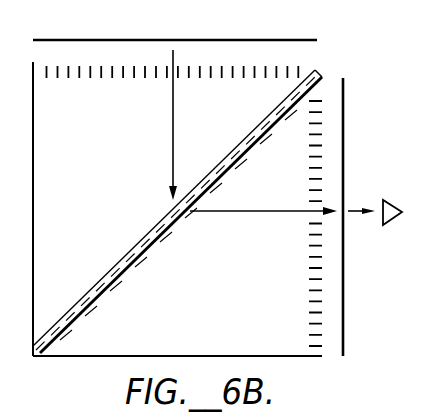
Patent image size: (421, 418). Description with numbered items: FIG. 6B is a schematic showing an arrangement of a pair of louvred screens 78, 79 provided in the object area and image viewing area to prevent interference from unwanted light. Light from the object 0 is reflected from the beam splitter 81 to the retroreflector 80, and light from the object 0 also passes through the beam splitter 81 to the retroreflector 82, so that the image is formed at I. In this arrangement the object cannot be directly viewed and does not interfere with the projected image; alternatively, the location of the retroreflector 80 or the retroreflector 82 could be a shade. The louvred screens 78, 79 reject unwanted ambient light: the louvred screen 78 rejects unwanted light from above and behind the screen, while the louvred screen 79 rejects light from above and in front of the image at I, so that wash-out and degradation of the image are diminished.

The object 0 is at (207, 40).
The louvred screen 78 is at (88, 70).
The louvred screen 79 is at (320, 100).
The retroreflector 80 is at (36, 284).
The beam splitter 81 is at (123, 275).
The retroreflector 82 is at (203, 355).
The image I is at (345, 143).